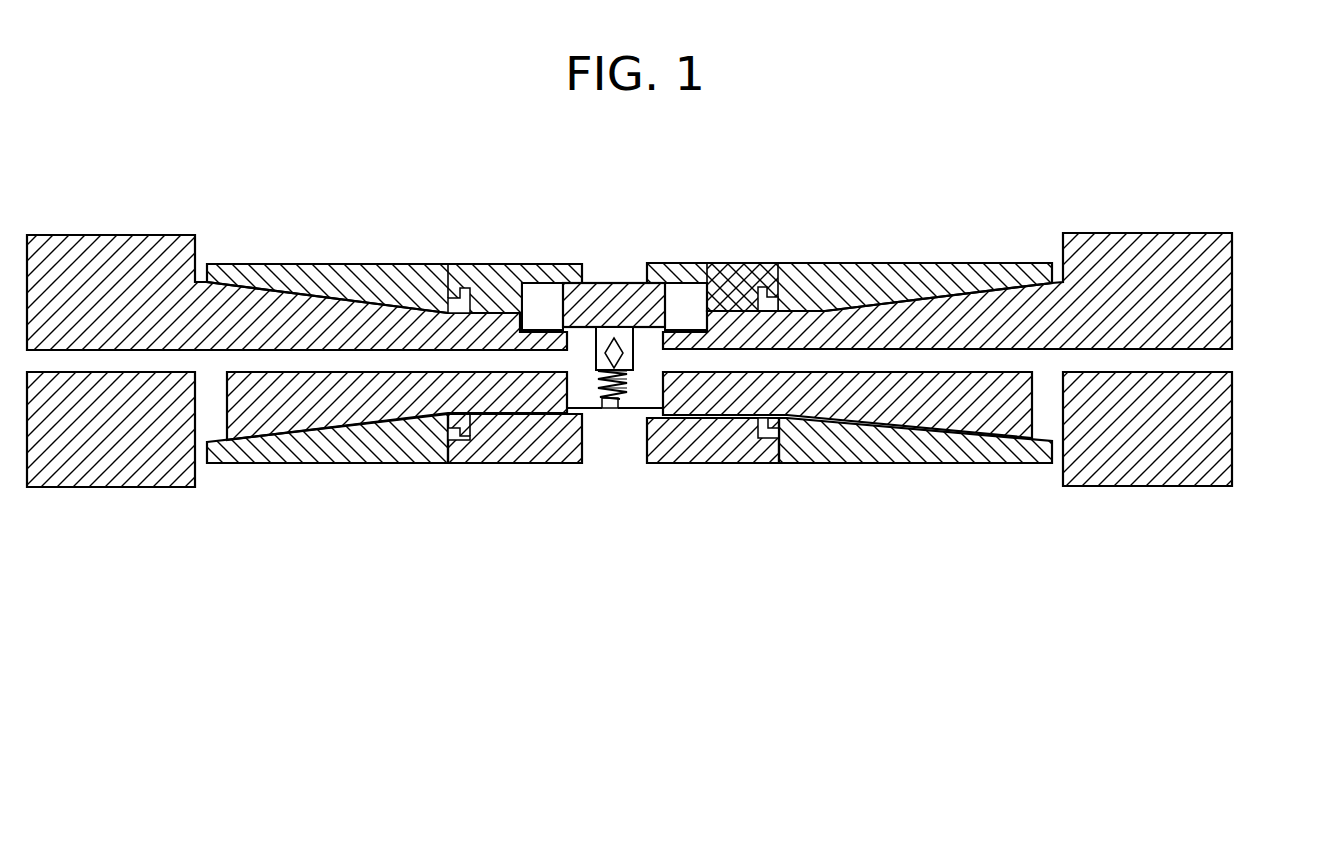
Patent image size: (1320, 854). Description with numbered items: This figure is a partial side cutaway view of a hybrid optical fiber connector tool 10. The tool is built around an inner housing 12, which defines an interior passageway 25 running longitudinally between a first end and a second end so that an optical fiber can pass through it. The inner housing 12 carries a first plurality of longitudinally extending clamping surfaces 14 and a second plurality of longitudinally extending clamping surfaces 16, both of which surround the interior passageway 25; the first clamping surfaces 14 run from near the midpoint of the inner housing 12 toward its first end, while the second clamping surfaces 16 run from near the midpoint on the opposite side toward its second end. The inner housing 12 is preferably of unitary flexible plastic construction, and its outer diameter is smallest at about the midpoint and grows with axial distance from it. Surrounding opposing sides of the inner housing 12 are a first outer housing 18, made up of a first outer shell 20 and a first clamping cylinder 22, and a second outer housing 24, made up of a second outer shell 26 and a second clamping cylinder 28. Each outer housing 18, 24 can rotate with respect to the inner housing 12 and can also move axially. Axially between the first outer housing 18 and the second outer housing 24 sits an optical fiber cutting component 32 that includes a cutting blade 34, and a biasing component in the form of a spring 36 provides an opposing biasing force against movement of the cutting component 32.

The hybrid optical fiber connector tool 10 is at (686, 182).
The inner housing 12 is at (847, 320).
The first plurality of longitudinally extending clamping surfaces 14 is at (973, 418).
The second plurality of longitudinally extending clamping surfaces 16 is at (292, 420).
The first outer housing 18 is at (778, 263).
The first outer shell 20 is at (865, 452).
The first clamping cylinder 22 is at (718, 452).
The second outer housing 24 is at (436, 262).
The interior passageway 25 is at (1195, 357).
The second outer shell 26 is at (400, 450).
The second clamping cylinder 28 is at (508, 453).
The optical fiber cutting component 32 is at (598, 282).
The cutting blade 34 is at (603, 409).
The spring 36 is at (617, 404).